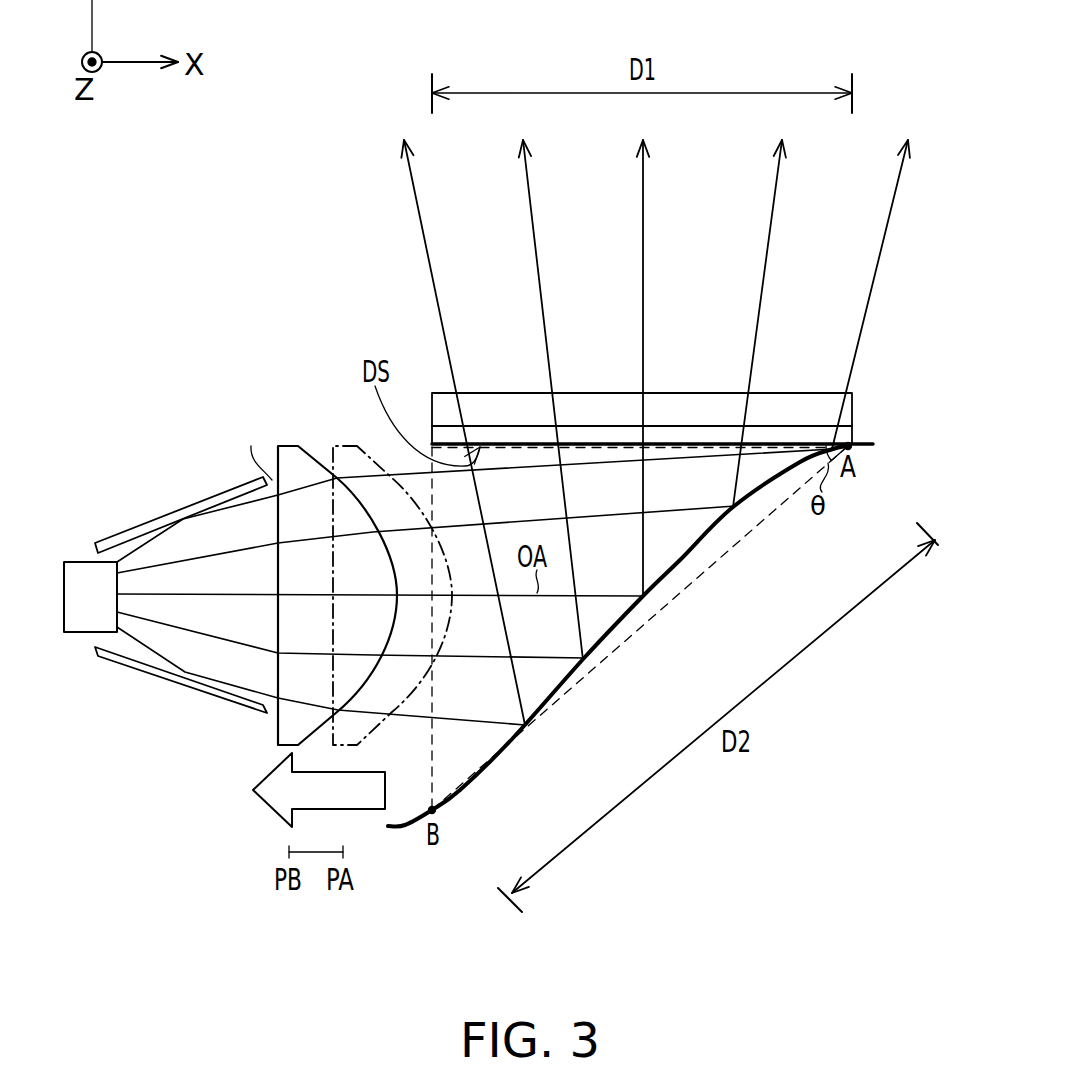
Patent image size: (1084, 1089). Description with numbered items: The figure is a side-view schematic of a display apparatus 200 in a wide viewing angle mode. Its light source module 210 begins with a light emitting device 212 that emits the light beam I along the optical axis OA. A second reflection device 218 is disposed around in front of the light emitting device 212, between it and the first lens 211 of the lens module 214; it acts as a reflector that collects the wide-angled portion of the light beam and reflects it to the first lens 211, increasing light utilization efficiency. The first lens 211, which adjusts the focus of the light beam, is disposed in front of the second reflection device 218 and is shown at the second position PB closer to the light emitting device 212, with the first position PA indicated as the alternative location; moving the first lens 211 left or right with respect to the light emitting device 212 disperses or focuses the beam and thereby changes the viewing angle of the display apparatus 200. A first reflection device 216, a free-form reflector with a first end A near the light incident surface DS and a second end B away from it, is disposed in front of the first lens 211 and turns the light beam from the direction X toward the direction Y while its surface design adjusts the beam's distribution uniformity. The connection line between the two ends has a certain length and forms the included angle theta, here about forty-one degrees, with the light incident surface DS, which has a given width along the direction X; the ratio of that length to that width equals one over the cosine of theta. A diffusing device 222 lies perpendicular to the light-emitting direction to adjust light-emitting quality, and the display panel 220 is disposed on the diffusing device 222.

The display apparatus 200 is at (921, 900).
The light source module 210 is at (192, 161).
The first lens 211 is at (392, 595).
The light emitting device 212 is at (90, 562).
The lens module 214 is at (288, 446).
The first reflection device 216 is at (667, 574).
The second reflection device 218 is at (203, 503).
The display panel 220 is at (845, 408).
The diffusing device 222 is at (842, 436).